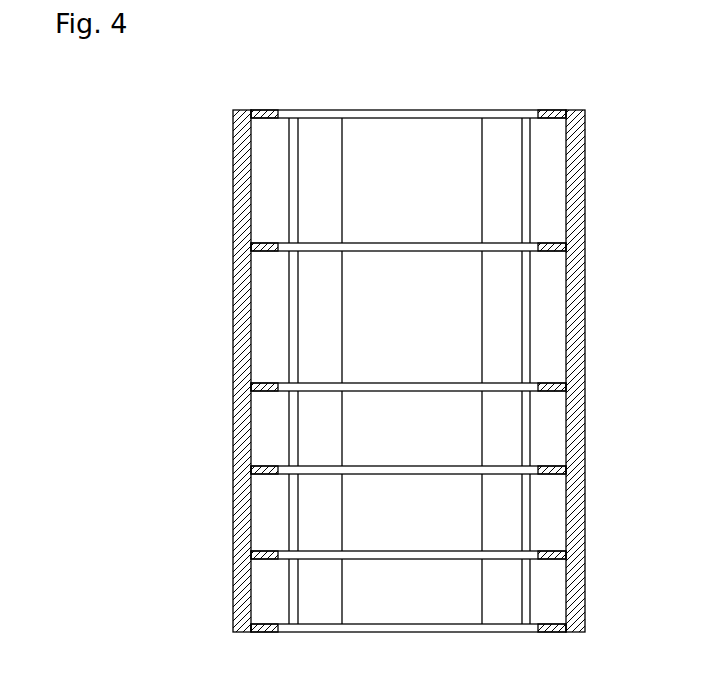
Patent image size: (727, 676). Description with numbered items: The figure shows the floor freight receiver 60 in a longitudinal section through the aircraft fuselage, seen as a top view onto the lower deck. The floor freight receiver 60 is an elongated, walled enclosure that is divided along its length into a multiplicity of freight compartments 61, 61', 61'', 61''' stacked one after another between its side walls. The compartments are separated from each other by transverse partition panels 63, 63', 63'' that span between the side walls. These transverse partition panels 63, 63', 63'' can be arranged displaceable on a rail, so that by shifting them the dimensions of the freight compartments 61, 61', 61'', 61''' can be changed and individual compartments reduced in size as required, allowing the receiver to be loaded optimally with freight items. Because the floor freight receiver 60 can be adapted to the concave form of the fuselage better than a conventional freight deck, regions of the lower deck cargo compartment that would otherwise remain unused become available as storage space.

The floor freight receiver 60 is at (188, 208).
The freight compartment 61 is at (484, 180).
The freight compartment 61' is at (474, 317).
The freight compartment 61'' is at (479, 428).
The freight compartment 61''' is at (486, 515).
The transverse partition panel 63 is at (462, 99).
The transverse partition panel 63' is at (455, 265).
The transverse partition panel 63'' is at (457, 403).